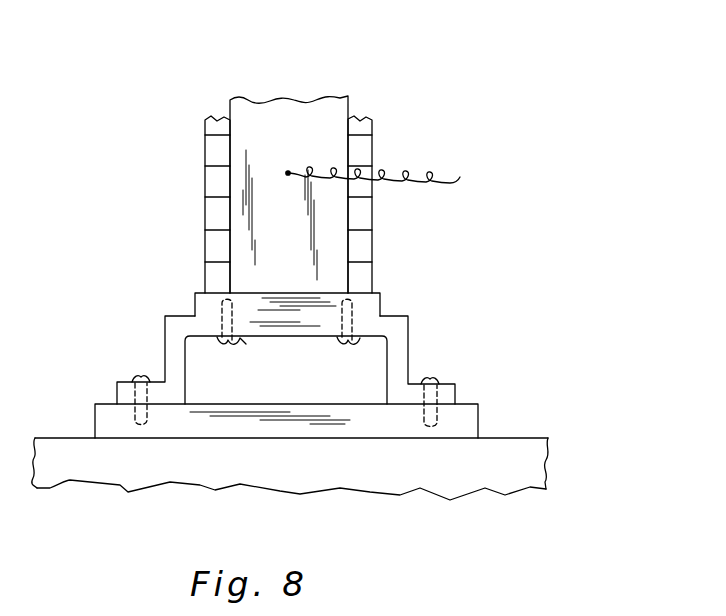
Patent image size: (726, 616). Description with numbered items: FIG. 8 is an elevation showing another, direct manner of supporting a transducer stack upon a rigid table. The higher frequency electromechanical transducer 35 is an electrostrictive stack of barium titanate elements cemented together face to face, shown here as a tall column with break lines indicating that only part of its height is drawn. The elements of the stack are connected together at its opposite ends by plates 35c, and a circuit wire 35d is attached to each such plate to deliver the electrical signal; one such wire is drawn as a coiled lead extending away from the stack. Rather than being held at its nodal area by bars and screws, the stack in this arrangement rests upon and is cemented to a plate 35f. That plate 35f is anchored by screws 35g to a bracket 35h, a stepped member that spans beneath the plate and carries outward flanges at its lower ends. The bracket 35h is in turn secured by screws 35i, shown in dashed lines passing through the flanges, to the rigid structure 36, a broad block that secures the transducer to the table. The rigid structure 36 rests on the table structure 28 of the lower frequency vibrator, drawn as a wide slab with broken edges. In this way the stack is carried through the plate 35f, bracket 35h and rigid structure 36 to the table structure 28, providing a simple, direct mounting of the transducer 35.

The plate 35c is at (304, 110).
The higher frequency electromechanical transducer 35 is at (382, 217).
The circuit wire 35d is at (430, 183).
The plate 35f is at (377, 306).
The bracket 35h is at (170, 328).
The screws 35g is at (237, 342).
The screws 35i is at (135, 376).
The rigid structure 36 is at (458, 417).
The table structure 28 is at (513, 452).